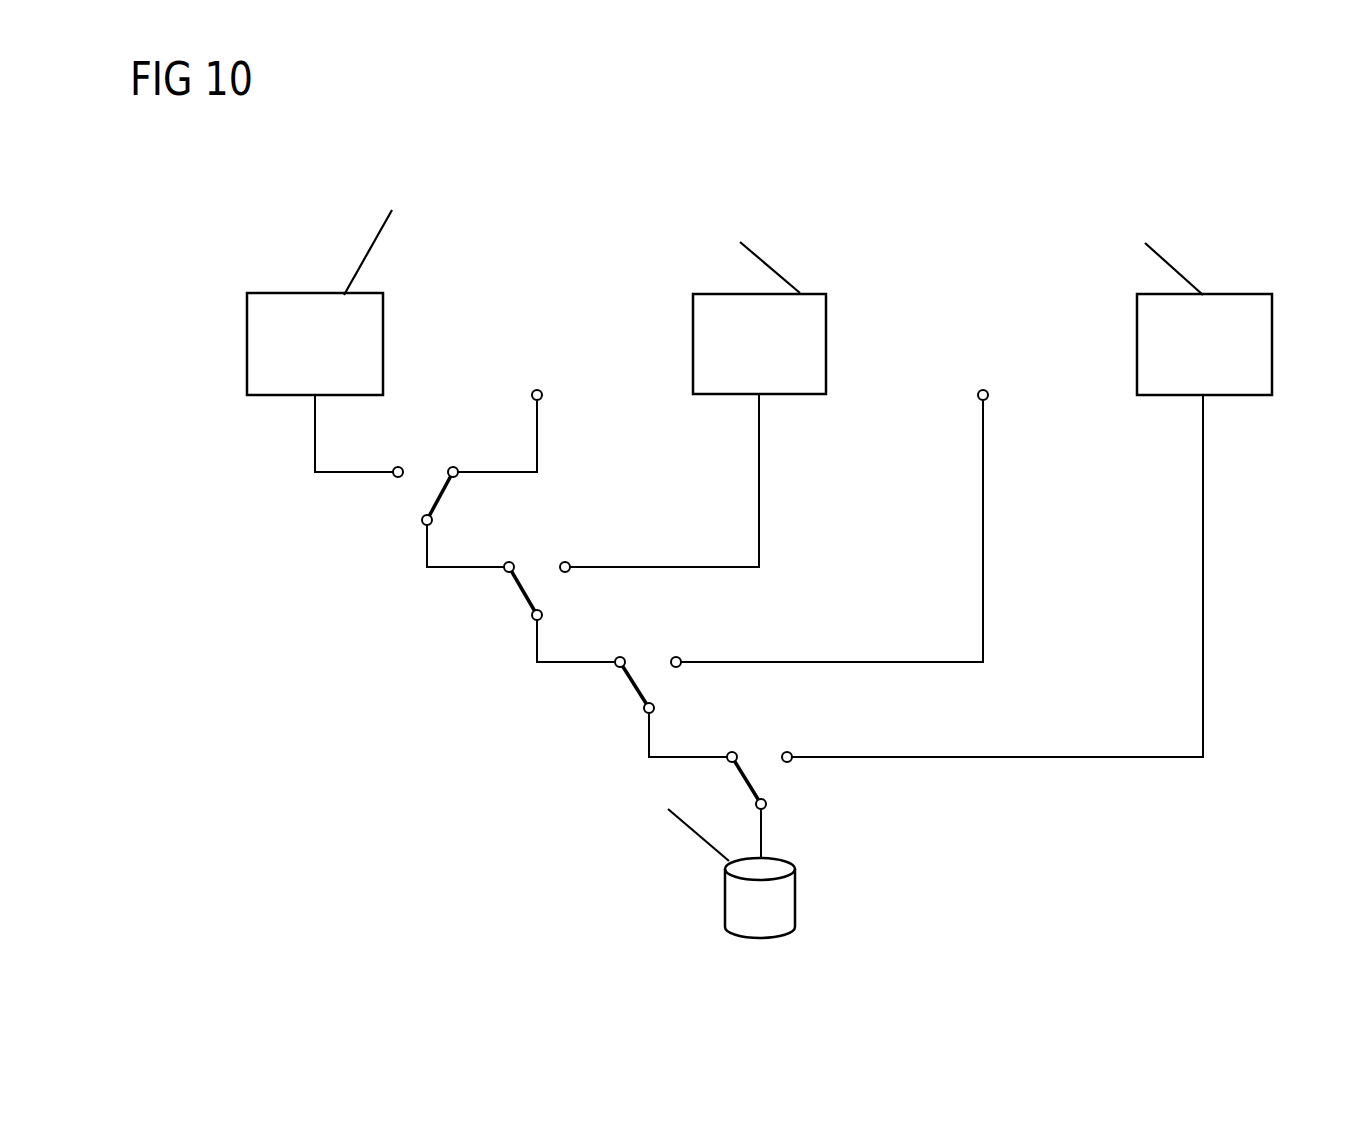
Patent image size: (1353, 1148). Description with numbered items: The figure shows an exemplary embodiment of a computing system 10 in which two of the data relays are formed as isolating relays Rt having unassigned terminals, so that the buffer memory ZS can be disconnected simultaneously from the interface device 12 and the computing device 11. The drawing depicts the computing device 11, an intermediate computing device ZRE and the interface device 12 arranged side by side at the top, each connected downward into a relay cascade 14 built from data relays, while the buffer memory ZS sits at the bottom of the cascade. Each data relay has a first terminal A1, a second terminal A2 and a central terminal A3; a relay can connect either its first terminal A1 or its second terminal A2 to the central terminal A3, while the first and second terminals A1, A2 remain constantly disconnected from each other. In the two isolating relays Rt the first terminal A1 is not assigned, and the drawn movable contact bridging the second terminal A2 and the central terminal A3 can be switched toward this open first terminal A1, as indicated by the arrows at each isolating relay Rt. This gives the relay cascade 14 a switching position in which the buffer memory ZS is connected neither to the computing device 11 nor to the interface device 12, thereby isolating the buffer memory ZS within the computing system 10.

The computing system 10 is at (272, 792).
The computing device 11 is at (330, 359).
The interface device 12 is at (1219, 360).
The relay cascade 14 is at (830, 594).
The first terminal A1 is at (457, 467).
The second terminal A2 is at (395, 468).
The central terminal A3 is at (423, 520).
The isolating relay Rt is at (423, 454).
The intermediate computing device ZRE is at (782, 360).
The buffer memory ZS is at (774, 922).